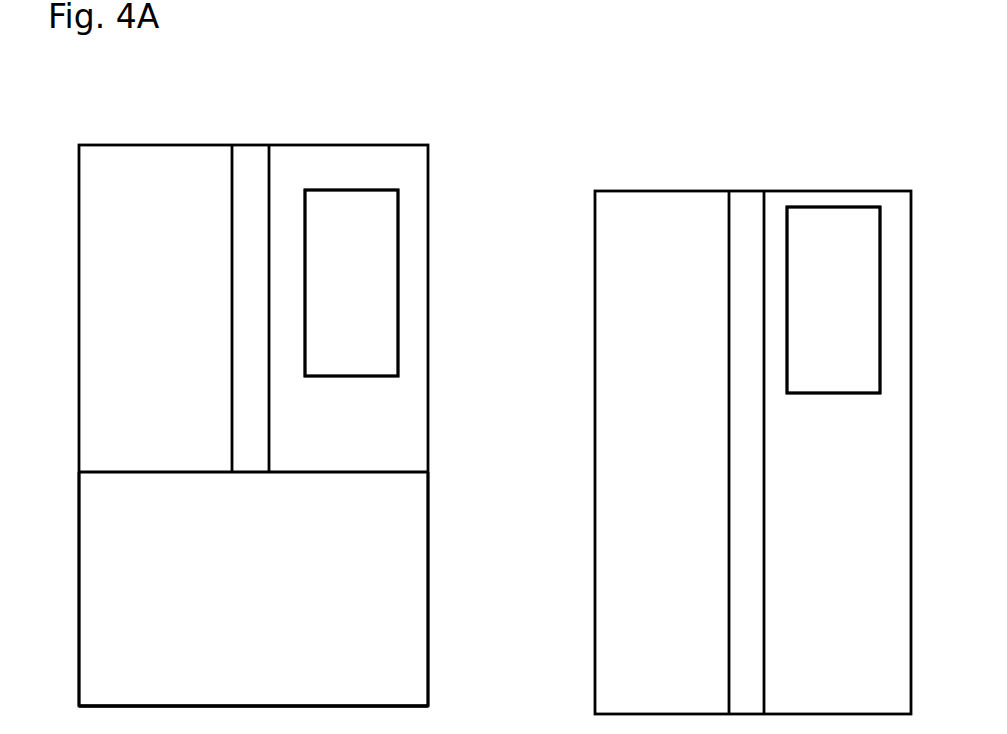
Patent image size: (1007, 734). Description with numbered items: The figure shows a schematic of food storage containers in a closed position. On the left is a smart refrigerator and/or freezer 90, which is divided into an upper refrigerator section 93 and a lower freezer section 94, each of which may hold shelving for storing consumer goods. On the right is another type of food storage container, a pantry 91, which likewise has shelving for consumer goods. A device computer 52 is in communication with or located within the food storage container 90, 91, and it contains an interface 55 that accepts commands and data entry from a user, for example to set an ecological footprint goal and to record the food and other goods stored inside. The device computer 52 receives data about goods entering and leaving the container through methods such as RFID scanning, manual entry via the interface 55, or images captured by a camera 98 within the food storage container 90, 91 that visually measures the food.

The refrigerator and/or freezer 90 is at (166, 143).
The pantry 91 is at (654, 188).
The refrigerator section 93 is at (188, 185).
The freezer section 94 is at (377, 581).
The device computer 52 is at (402, 250).
The interface 55 is at (347, 223).
The camera 98 is at (253, 720).